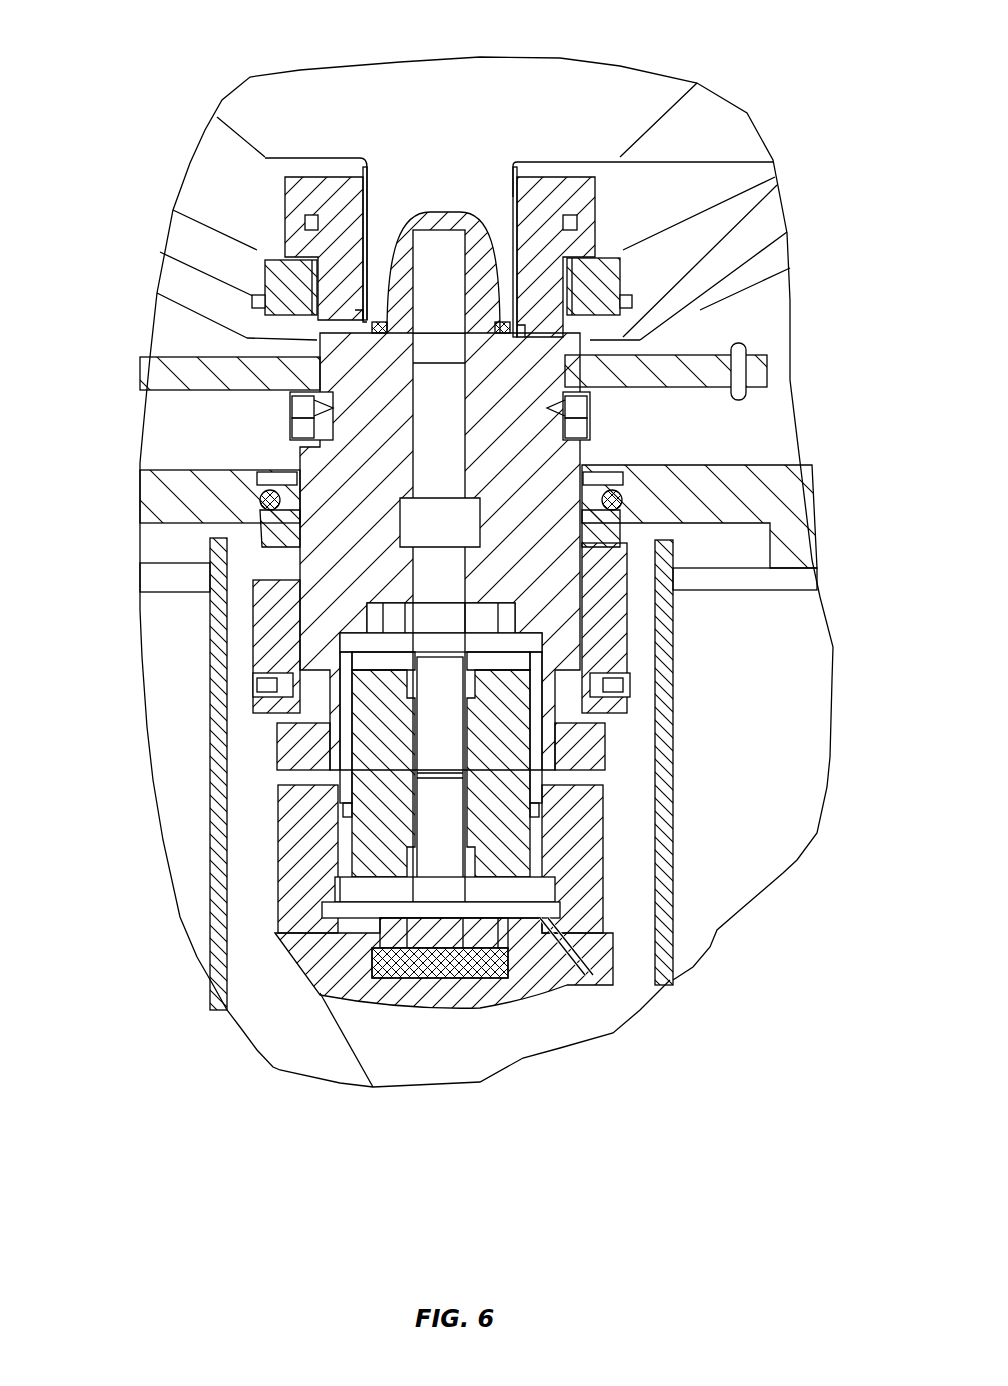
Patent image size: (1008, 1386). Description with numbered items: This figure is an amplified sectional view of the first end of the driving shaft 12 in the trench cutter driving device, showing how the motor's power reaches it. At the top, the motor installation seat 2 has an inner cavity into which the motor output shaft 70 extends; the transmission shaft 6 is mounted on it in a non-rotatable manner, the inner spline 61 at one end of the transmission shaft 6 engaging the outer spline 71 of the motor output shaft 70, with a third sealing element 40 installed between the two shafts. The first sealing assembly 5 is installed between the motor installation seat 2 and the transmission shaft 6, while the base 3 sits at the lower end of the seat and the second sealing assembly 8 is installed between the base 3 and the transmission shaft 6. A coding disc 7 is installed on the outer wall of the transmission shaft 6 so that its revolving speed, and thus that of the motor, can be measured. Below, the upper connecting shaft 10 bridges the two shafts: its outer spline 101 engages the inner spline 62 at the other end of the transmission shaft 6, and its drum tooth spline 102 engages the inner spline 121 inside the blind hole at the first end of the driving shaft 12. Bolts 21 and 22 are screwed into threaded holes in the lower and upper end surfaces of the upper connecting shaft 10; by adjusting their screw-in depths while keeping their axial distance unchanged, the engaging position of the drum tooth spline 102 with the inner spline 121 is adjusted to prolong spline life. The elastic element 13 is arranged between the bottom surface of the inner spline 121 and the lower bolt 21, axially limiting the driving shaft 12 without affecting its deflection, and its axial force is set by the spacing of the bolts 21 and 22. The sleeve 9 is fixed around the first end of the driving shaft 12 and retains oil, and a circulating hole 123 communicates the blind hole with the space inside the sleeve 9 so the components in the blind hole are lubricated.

The motor installation seat 2 is at (223, 265).
The base 3 is at (180, 498).
The first sealing assembly 5 is at (595, 287).
The transmission shaft 6 is at (333, 441).
The coding disc 7 is at (660, 357).
The second sealing assembly 8 is at (607, 653).
The sleeve 9 is at (225, 857).
The upper connecting shaft 10 is at (497, 767).
The driving shaft 12 is at (535, 1003).
The elastic element 13 is at (428, 978).
The bolt 21 is at (420, 933).
The bolt 22 is at (420, 620).
The third sealing element 40 is at (360, 326).
The inner spline 61 is at (362, 212).
The inner spline 62 is at (340, 720).
The motor output shaft 70 is at (423, 195).
The outer spline 71 is at (513, 197).
The outer spline 101 is at (347, 750).
The drum tooth spline 102 is at (548, 823).
The inner spline 121 is at (550, 887).
The circulating hole 123 is at (567, 963).